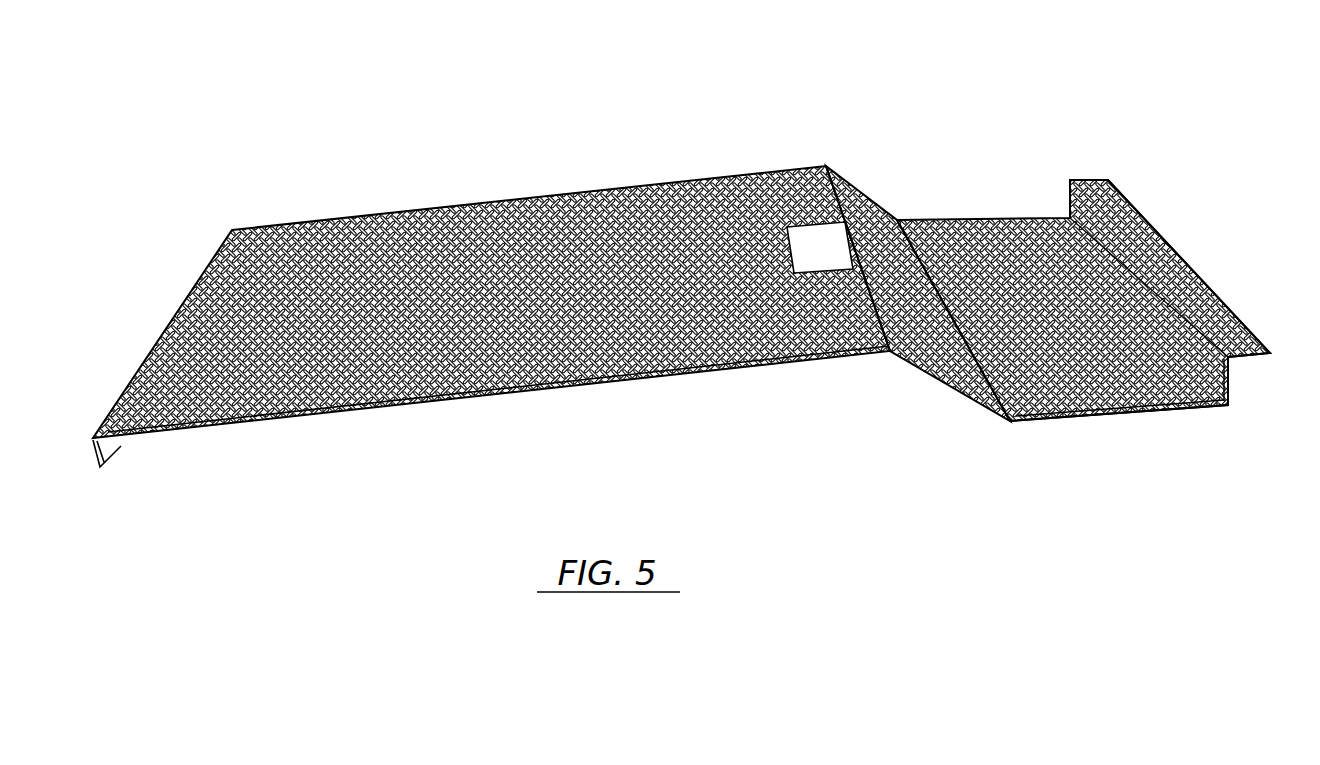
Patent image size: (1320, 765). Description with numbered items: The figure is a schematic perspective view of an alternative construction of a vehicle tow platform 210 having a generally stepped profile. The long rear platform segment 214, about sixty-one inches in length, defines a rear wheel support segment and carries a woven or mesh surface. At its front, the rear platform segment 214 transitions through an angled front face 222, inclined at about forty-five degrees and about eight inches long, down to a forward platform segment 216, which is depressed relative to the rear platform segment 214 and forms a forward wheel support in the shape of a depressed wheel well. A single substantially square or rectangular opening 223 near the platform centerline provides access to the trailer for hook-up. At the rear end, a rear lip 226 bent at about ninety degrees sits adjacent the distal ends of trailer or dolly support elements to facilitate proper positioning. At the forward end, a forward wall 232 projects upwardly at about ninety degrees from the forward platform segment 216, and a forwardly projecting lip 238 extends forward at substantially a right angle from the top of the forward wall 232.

The vehicle tow platform 210 is at (705, 263).
The rear platform segment 214 is at (491, 289).
The forward platform segment 216 is at (1107, 331).
The angled front face 222 is at (957, 386).
The opening 223 is at (803, 261).
The rear lip 226 is at (111, 465).
The forward wall 232 is at (1235, 390).
The forwardly projecting lip 238 is at (1267, 346).